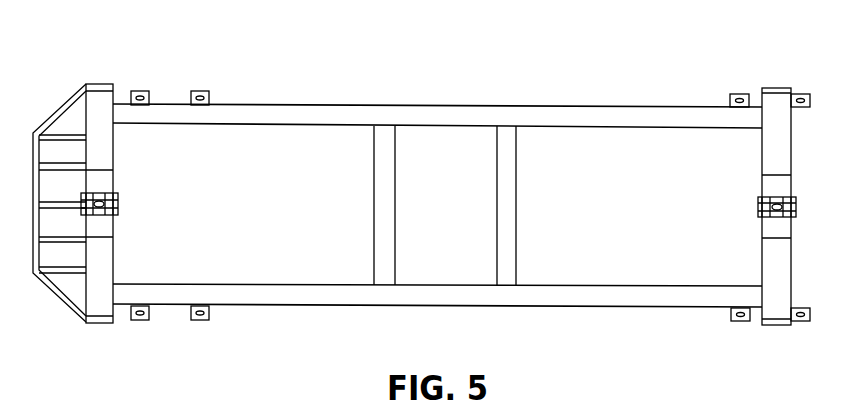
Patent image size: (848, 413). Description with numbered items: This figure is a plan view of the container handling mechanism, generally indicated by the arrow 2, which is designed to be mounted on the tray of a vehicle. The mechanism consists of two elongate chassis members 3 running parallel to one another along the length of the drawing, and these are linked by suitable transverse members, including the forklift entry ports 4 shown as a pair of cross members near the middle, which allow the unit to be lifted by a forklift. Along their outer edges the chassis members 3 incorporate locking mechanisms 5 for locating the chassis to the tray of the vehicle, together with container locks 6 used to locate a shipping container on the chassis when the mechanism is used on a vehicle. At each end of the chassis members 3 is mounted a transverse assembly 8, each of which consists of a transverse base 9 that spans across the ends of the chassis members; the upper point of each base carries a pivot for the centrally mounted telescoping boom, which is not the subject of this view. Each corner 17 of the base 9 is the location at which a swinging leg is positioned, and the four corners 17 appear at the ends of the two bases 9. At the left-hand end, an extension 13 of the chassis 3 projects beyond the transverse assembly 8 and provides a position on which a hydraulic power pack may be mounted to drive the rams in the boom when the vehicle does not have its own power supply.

The mechanism 2 is at (437, 187).
The chassis members 3 is at (441, 113).
The forklift entry ports 4 is at (502, 211).
The locking mechanisms 5 is at (201, 90).
The container locks 6 is at (140, 90).
The transverse assembly 8 is at (115, 253).
The transverse base 9 is at (103, 155).
The extension 13 is at (55, 292).
The corner 17 is at (101, 82).